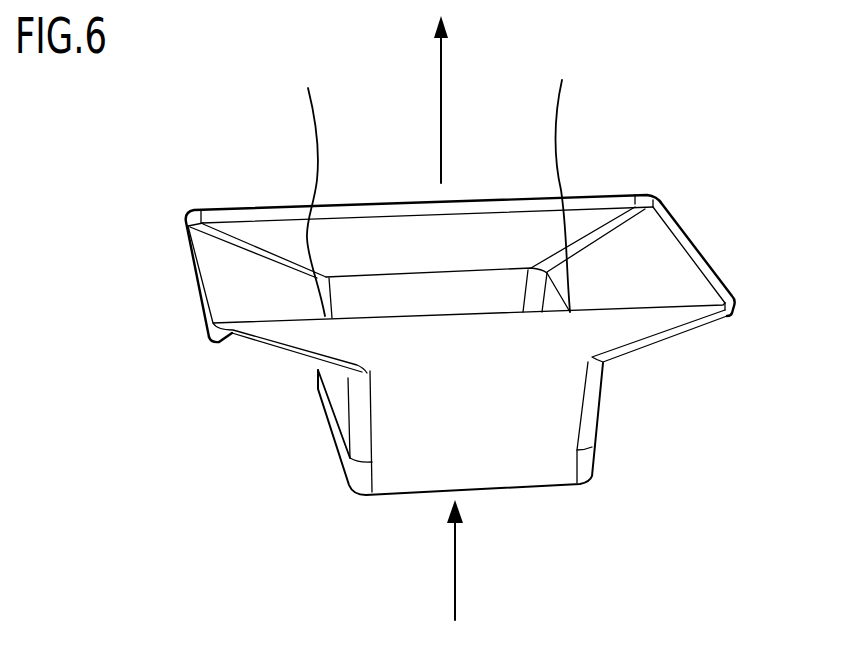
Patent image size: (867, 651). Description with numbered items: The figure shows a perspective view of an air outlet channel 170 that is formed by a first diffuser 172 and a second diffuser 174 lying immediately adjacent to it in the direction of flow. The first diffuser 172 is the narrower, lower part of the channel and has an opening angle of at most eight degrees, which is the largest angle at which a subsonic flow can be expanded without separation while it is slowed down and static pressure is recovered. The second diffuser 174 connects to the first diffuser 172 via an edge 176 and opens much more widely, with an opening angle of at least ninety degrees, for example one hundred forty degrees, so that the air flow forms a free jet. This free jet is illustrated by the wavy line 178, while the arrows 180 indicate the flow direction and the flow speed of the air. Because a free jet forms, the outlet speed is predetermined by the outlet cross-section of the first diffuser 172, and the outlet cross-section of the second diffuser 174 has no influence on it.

The air outlet channel 170 is at (711, 214).
The first diffuser 172 is at (342, 407).
The second diffuser 174 is at (263, 348).
The edge 176 is at (323, 315).
The wavy line 178 is at (318, 140).
The arrows 180 is at (438, 86).